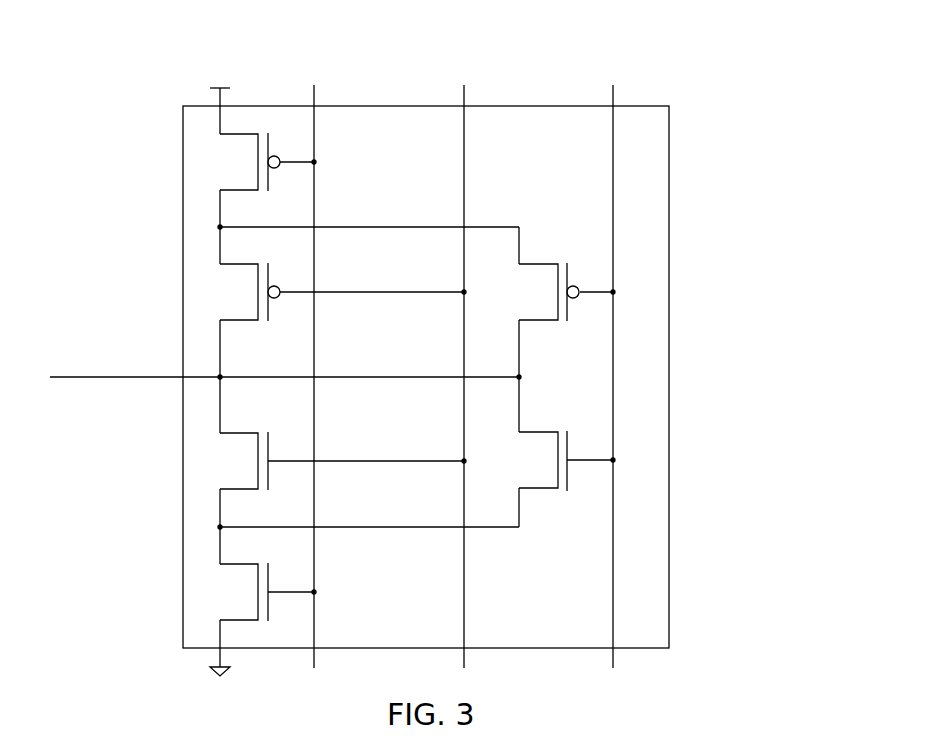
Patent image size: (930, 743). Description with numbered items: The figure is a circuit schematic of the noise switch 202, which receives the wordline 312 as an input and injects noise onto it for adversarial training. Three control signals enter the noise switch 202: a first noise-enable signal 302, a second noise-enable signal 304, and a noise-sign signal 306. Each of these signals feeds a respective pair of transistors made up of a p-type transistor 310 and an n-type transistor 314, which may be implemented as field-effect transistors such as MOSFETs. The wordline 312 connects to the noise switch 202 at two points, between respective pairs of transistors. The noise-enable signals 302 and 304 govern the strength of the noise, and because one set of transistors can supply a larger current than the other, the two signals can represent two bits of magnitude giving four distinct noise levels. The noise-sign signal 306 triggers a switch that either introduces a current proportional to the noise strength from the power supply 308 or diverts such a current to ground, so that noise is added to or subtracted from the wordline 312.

The noise switch 202 is at (669, 162).
The noise_enable_1 signal 302 is at (613, 88).
The noise_enable_2 signal 304 is at (464, 88).
The noise_sign signal 306 is at (314, 88).
The power supply 308 is at (228, 88).
The p-type transistor 310 is at (567, 280).
The wordline 312 is at (125, 377).
The n-type transistor 314 is at (567, 440).